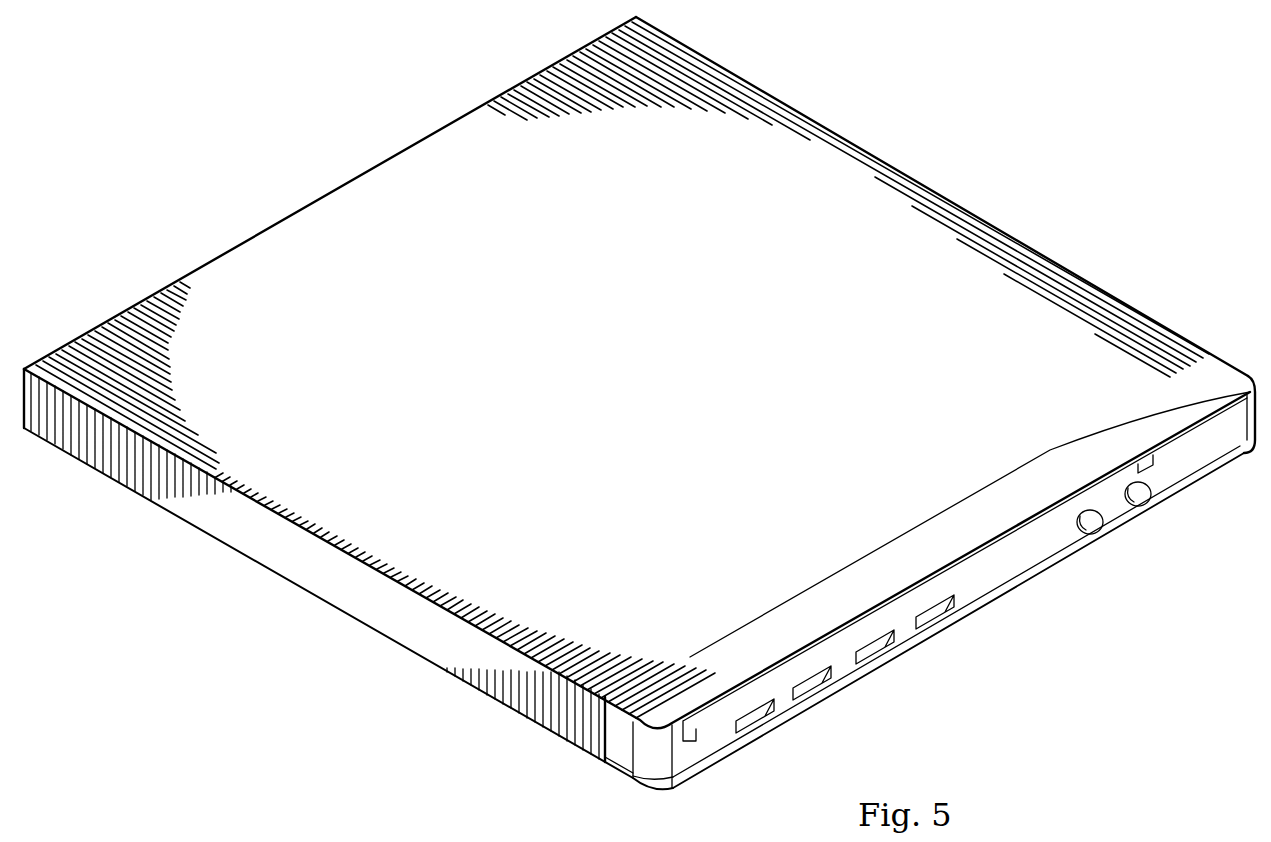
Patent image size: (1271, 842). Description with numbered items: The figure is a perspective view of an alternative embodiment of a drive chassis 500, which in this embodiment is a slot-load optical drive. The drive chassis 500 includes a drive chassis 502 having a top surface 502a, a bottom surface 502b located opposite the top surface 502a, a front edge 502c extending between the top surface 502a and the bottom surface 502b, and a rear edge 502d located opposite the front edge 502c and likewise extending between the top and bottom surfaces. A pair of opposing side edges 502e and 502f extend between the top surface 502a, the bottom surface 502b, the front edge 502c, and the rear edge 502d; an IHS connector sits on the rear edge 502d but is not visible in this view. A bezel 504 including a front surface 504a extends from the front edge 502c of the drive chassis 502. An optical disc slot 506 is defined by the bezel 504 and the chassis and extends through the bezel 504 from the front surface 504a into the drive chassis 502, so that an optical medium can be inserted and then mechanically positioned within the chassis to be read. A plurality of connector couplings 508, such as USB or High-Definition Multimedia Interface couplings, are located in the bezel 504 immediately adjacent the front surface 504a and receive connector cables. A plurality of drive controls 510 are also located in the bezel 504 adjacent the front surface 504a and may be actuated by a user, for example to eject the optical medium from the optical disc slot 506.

The drive chassis 500 is at (642, 404).
The drive chassis 502 is at (637, 403).
The top surface 502a is at (612, 333).
The bottom surface 502b is at (400, 650).
The front edge 502c is at (807, 590).
The rear edge 502d is at (330, 194).
The side edge 502e is at (222, 540).
The side edge 502f is at (932, 196).
The bezel 504 is at (642, 555).
The front surface 504a is at (1005, 570).
The optical disc slot 506 is at (963, 572).
The connector couplings 508 is at (748, 722).
The drive controls 510 is at (1150, 502).